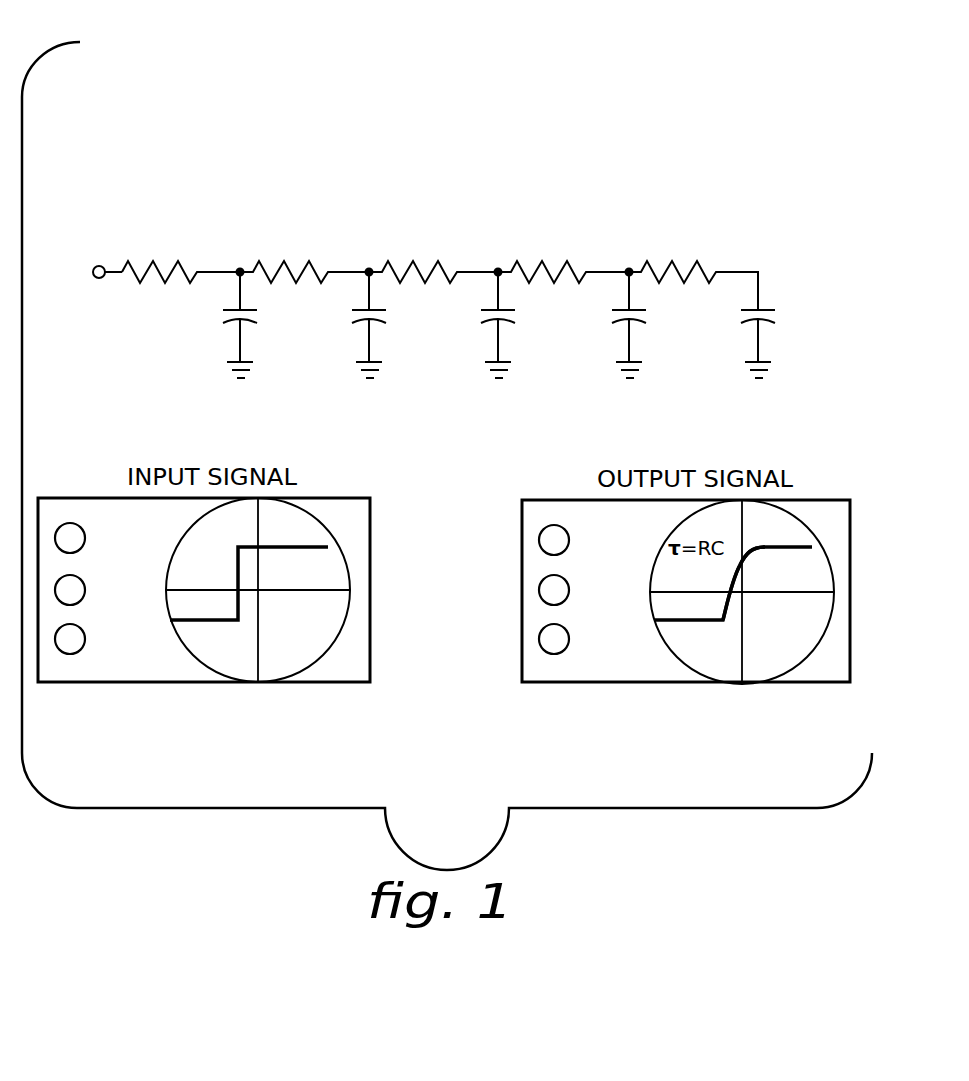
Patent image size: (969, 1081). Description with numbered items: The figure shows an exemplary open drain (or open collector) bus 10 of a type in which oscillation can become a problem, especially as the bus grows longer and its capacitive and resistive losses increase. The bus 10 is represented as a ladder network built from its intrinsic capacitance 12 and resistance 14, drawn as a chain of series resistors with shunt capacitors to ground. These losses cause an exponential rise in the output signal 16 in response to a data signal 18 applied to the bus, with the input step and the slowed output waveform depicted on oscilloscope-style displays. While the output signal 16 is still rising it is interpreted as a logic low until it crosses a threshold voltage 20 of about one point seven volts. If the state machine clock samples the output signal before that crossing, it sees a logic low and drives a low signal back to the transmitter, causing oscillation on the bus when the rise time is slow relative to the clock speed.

The open drain bus 10 is at (580, 105).
The intrinsic capacitance 12 is at (228, 305).
The resistance 14 is at (157, 262).
The output signal 16 is at (777, 545).
The data signal 18 is at (303, 545).
The threshold voltage 20 is at (748, 562).